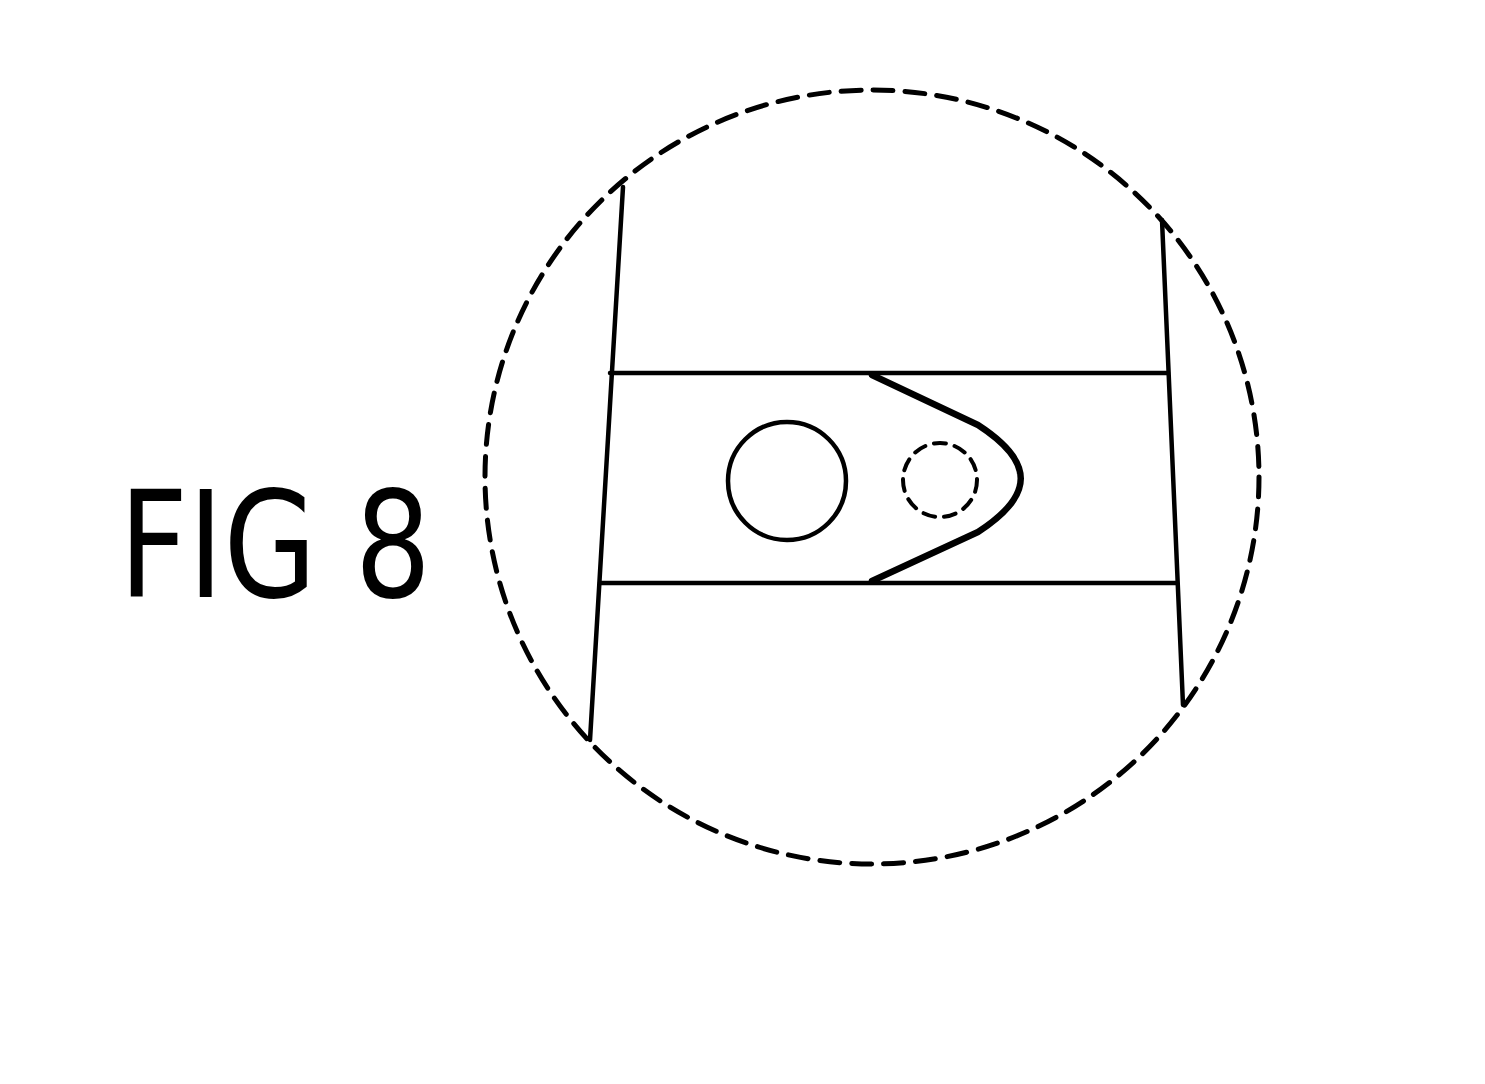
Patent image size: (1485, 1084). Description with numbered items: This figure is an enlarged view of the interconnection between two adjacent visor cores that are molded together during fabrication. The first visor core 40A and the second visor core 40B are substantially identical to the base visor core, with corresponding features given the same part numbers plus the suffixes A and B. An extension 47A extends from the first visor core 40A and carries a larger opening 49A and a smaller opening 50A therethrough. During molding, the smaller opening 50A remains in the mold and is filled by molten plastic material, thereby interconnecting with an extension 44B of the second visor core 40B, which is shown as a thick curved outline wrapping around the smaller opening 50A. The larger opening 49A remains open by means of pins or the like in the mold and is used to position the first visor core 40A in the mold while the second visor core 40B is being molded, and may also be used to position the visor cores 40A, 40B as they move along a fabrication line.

The first visor core 40A is at (555, 331).
The second visor core 40B is at (1212, 545).
The extension of second visor core 44B is at (995, 563).
The extension of first visor core 47A is at (700, 600).
The larger opening 49A is at (767, 432).
The smaller opening 50A is at (950, 457).